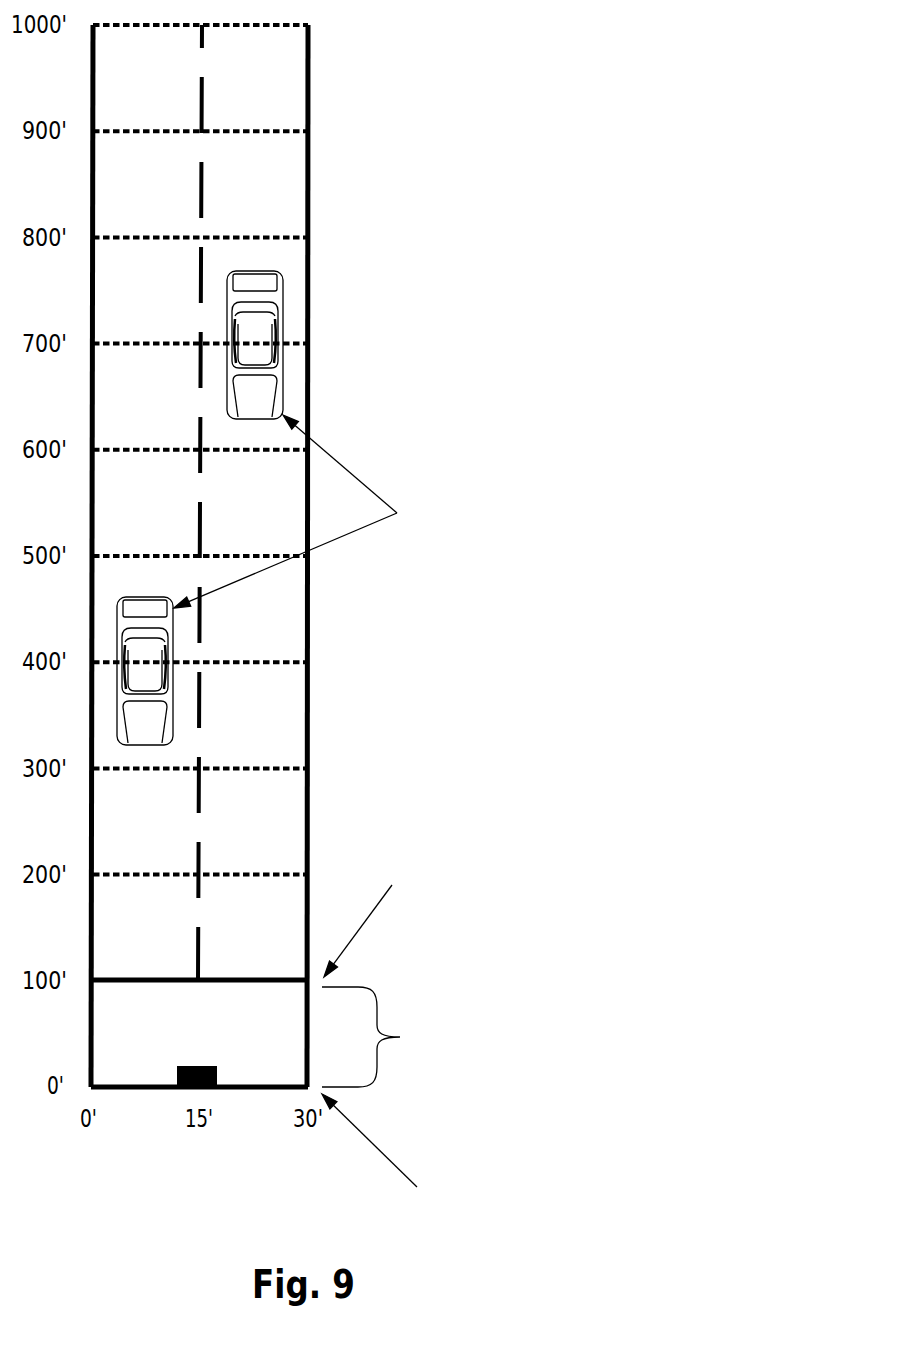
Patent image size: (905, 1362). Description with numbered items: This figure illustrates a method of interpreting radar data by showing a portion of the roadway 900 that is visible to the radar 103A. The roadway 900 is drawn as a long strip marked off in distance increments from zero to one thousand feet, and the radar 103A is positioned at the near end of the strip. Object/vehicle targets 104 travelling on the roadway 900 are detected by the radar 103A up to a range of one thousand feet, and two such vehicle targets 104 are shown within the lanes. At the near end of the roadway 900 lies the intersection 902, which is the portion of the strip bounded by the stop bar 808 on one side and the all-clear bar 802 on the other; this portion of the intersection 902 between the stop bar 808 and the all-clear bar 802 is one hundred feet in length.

The roadway 900 is at (311, 225).
The object/vehicle targets 104 is at (497, 508).
The stop bar 808 is at (462, 882).
The intersection 902 is at (497, 1033).
The all-clear bar 802 is at (507, 1183).
The radar 103A is at (176, 1073).